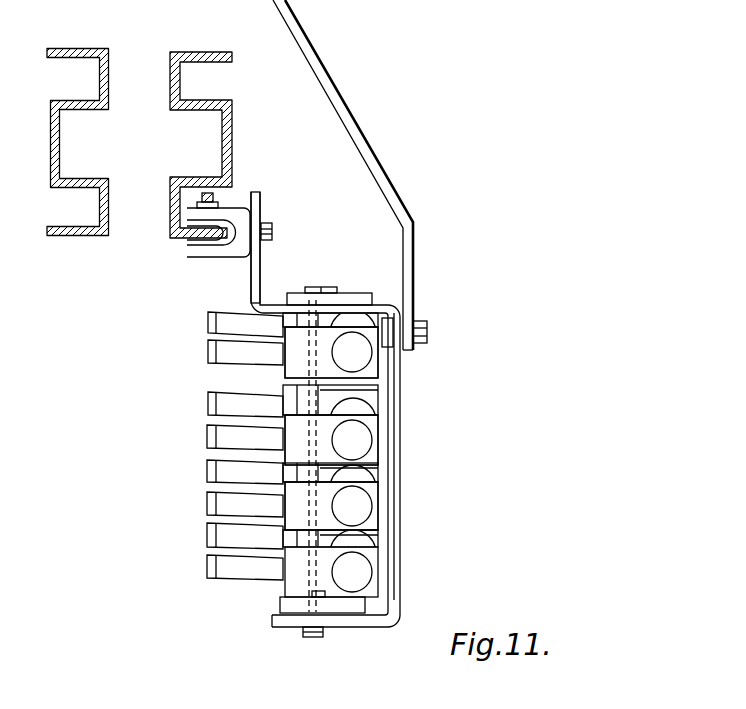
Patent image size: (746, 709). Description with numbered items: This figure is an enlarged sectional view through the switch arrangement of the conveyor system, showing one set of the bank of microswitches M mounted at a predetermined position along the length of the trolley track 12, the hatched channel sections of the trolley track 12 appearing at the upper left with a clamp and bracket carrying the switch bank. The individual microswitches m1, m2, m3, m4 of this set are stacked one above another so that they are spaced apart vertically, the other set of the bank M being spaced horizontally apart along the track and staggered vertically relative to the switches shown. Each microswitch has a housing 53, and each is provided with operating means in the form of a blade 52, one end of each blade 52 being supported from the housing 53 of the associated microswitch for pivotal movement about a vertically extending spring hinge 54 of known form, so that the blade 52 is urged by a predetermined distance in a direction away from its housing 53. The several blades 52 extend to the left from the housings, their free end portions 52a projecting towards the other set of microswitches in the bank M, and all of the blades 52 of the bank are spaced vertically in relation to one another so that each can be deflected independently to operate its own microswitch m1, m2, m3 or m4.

The trolley track 12 is at (140, 65).
The blade 52 is at (223, 350).
The free end portion of blade 52a is at (225, 323).
The housing 53 is at (331, 428).
The spring hinge 54 is at (293, 322).
The microswitch m1 is at (377, 376).
The microswitch m2 is at (376, 456).
The microswitch m3 is at (376, 521).
The microswitch m4 is at (374, 593).
The bank of microswitches M is at (405, 486).